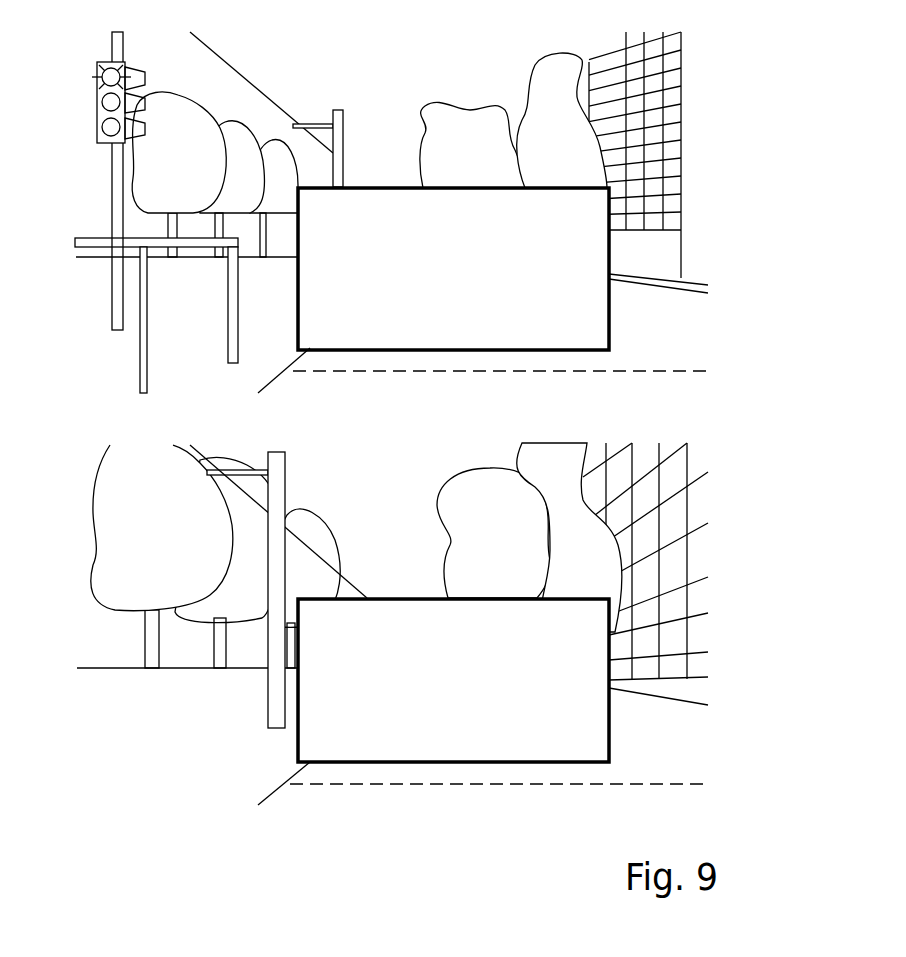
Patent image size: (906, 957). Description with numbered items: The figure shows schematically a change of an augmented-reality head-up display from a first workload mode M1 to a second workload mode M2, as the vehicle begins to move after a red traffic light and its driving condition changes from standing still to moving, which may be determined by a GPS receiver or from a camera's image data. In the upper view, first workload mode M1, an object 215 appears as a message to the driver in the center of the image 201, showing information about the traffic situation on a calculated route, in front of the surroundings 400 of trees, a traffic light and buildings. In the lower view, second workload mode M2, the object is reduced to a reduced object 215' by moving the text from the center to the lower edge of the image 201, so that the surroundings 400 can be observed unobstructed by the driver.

The surroundings 400 is at (197, 177).
The image 201 is at (266, 369).
The object 215 is at (525, 269).
The reduced object 215' is at (516, 680).
The first workload mode M1 is at (668, 155).
The second workload mode M2 is at (666, 561).